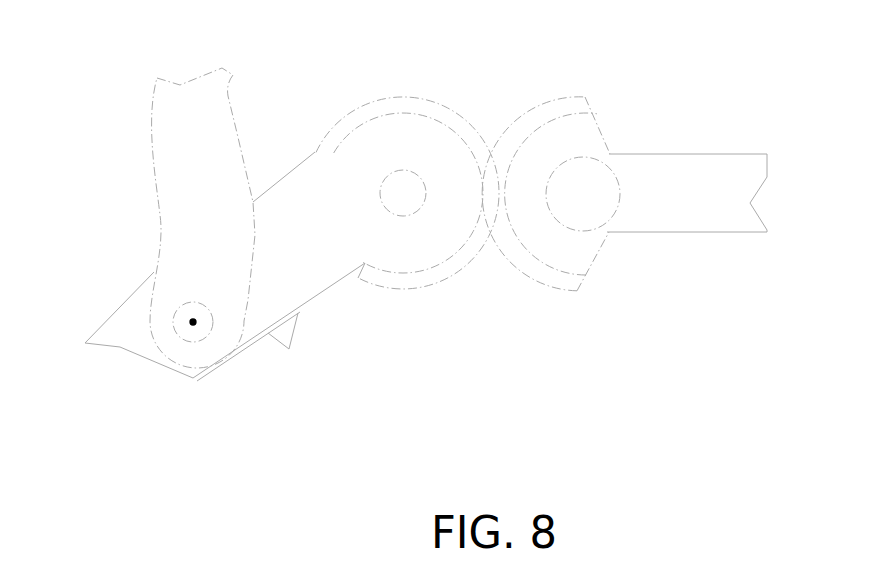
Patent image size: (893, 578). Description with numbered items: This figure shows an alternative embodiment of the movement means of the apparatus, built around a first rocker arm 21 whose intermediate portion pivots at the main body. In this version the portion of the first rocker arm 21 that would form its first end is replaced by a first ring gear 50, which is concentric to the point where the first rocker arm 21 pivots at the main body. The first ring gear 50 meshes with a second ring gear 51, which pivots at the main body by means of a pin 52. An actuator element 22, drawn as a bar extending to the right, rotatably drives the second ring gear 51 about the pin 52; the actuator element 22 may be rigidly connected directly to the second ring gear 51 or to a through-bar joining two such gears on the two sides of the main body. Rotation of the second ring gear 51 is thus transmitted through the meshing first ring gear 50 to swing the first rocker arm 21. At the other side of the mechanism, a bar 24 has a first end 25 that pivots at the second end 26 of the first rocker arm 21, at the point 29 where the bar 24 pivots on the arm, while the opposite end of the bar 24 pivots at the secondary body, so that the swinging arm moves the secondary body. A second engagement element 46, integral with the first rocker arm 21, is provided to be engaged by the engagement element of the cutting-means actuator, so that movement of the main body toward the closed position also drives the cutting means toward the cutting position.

The first rocker arm 21 is at (355, 212).
The actuator element 22 is at (712, 187).
The bar 24 is at (200, 142).
The first end 25 is at (165, 333).
The second end 26 is at (197, 365).
The point 29 is at (193, 322).
The second engagement element 46 is at (290, 334).
The first ring gear 50 is at (448, 270).
The second ring gear 51 is at (523, 258).
The pin 52 is at (588, 192).